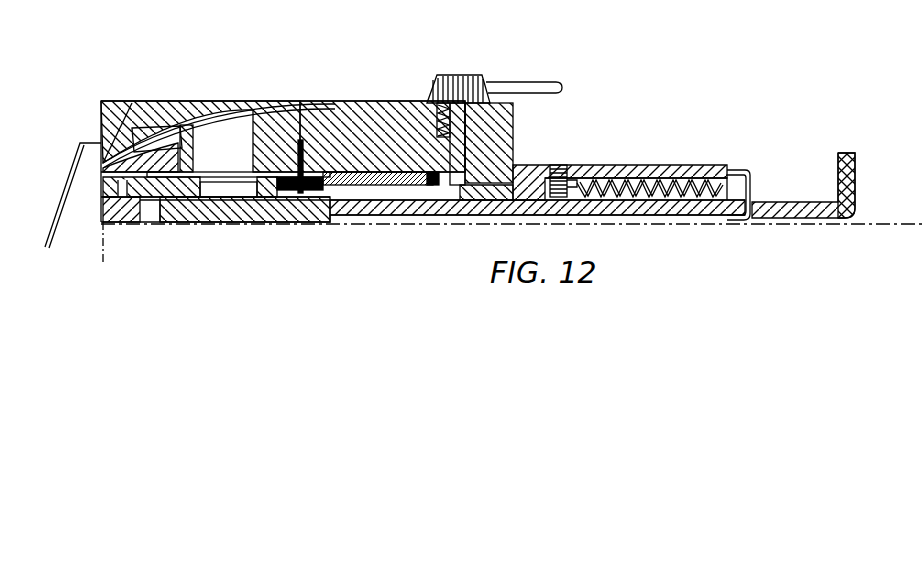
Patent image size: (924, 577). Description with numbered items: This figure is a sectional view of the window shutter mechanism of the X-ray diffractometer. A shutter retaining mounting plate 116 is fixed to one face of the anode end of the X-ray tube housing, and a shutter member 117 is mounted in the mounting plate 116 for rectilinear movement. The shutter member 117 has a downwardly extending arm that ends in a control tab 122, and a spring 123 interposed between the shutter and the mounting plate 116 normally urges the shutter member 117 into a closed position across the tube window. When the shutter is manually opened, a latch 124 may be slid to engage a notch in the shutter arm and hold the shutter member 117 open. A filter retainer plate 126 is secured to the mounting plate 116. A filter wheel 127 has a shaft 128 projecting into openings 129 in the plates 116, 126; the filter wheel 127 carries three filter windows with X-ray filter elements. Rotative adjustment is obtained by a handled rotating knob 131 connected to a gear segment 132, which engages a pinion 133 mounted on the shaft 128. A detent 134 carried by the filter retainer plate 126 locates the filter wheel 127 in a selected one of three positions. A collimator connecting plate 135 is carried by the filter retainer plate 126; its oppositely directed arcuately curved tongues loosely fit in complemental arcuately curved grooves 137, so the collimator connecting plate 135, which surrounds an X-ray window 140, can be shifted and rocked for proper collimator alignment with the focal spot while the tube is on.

The shutter retaining mounting plate 116 is at (610, 168).
The shutter member 117 is at (542, 212).
The control tab 122 is at (855, 177).
The spring 123 is at (673, 195).
The latch 124 is at (750, 175).
The filter retainer plate 126 is at (495, 128).
The filter wheel 127 is at (383, 177).
The shaft 128 is at (297, 163).
The openings 129 is at (293, 147).
The handled rotating knob 131 is at (470, 78).
The gear segment 132 is at (433, 187).
The pinion 133 is at (280, 182).
The detent 134 is at (437, 112).
The collimator connecting plate 135 is at (172, 108).
The arcuately curved grooves 137 is at (350, 158).
The X-ray window 140 is at (215, 115).